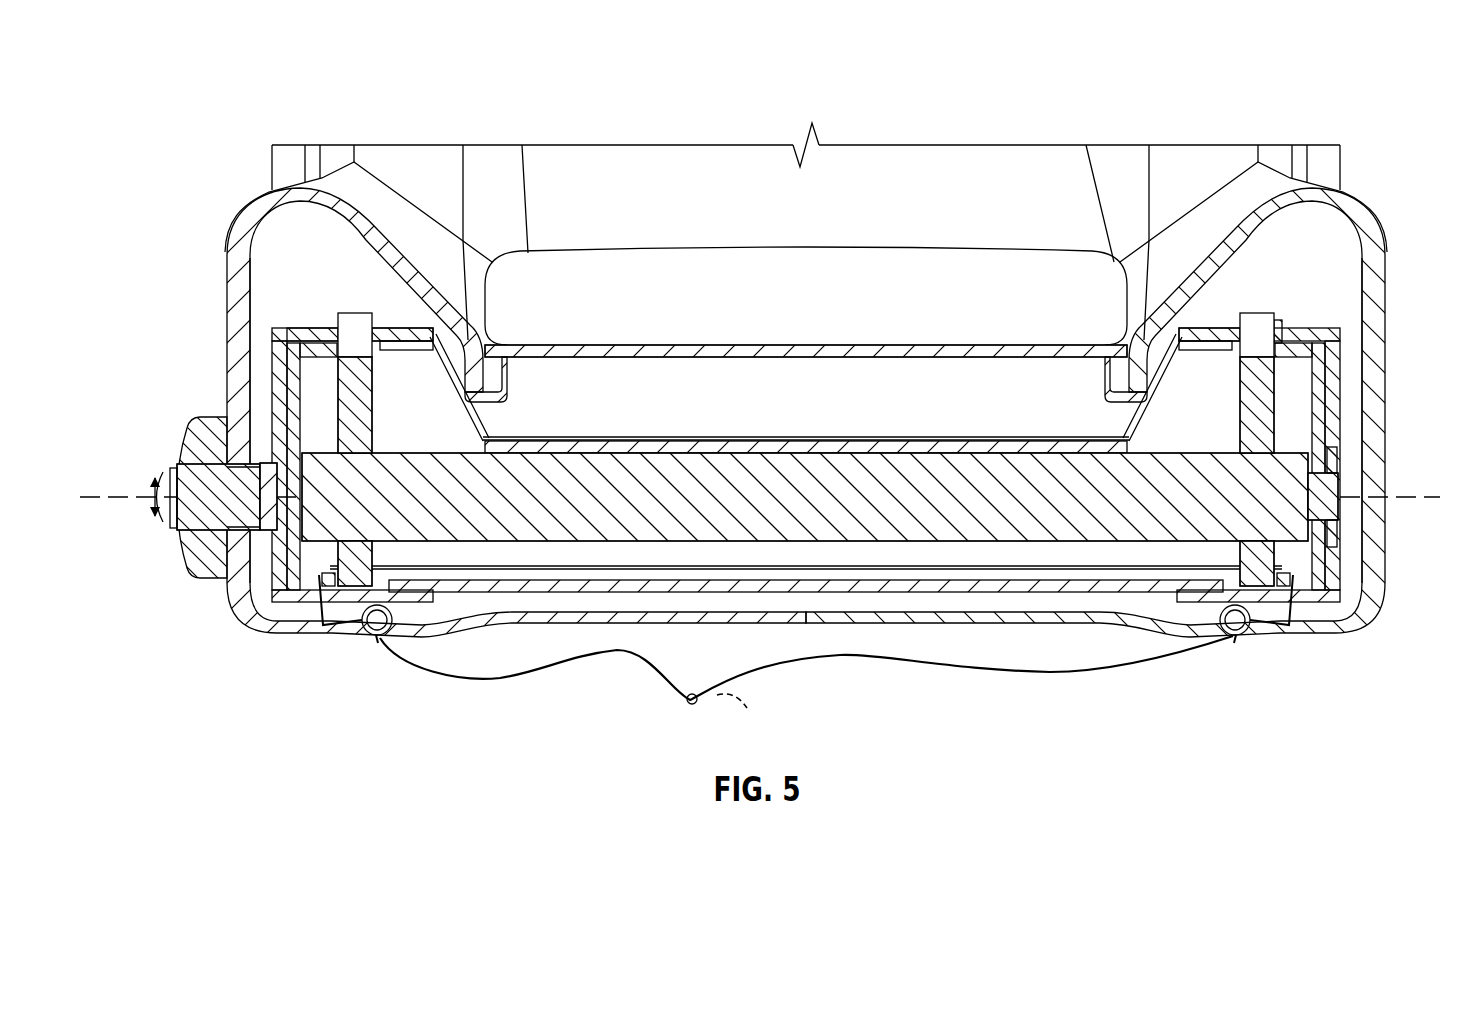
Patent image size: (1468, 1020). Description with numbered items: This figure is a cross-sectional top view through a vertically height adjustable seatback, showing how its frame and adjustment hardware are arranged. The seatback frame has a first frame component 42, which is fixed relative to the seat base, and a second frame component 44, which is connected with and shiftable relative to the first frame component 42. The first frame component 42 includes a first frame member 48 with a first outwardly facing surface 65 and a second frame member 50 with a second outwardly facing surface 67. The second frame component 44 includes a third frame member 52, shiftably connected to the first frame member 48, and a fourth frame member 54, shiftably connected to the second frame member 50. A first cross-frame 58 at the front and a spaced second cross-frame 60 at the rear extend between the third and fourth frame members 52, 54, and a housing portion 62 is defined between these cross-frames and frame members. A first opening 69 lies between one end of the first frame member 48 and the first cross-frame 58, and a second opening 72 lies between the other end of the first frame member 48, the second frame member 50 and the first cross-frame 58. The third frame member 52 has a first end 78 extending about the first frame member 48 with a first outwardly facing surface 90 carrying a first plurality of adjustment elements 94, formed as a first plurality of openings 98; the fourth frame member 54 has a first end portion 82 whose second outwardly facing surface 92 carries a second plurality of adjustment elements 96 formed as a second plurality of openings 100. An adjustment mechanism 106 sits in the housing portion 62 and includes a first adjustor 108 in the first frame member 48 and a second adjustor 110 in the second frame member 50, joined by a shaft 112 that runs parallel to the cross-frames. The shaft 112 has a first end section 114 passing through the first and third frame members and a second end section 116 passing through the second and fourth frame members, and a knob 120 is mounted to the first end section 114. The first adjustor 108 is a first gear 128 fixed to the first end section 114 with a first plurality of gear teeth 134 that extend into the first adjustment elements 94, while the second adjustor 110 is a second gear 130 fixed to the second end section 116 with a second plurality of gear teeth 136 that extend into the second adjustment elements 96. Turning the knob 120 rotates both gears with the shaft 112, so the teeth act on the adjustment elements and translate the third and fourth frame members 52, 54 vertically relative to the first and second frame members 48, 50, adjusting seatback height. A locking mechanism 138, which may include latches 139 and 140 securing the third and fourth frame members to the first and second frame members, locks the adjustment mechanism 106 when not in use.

The first frame component 42 is at (1298, 368).
The second frame component 44 is at (267, 307).
The first frame member 48 is at (357, 383).
The second frame member 50 is at (1300, 410).
The third frame member 52 is at (313, 393).
The fourth frame member 54 is at (1343, 340).
The first cross-frame 58 is at (802, 432).
The second cross-frame 60 is at (643, 592).
The housing portion 62 is at (683, 567).
The first outwardly facing surface 65 is at (298, 347).
The second outwardly facing surface 67 is at (1300, 352).
The first opening 69 is at (340, 340).
The second opening 72 is at (1277, 347).
The first end 78 is at (485, 312).
The first end portion 82 is at (1128, 365).
The first outwardly facing surface 90 is at (307, 333).
The second outwardly facing surface 92 is at (1322, 332).
The first plurality of adjustment elements 94 is at (382, 348).
The second plurality of adjustment elements 96 is at (1252, 327).
The first plurality of openings 98 is at (382, 330).
The second plurality of openings 100 is at (1277, 333).
The adjustment mechanism 106 is at (513, 553).
The first adjustor 108 is at (357, 435).
The second adjustor 110 is at (1254, 432).
The shaft 112 is at (973, 470).
The first end section 114 is at (267, 487).
The second end section 116 is at (1330, 500).
The knob 120 is at (197, 547).
The first gear 128 is at (268, 333).
The second gear 130 is at (1260, 383).
The first plurality of gear teeth 134 is at (360, 330).
The second plurality of gear teeth 136 is at (1270, 313).
The locking mechanism 138 is at (721, 709).
The latch 139 is at (330, 615).
The latch 140 is at (1295, 613).